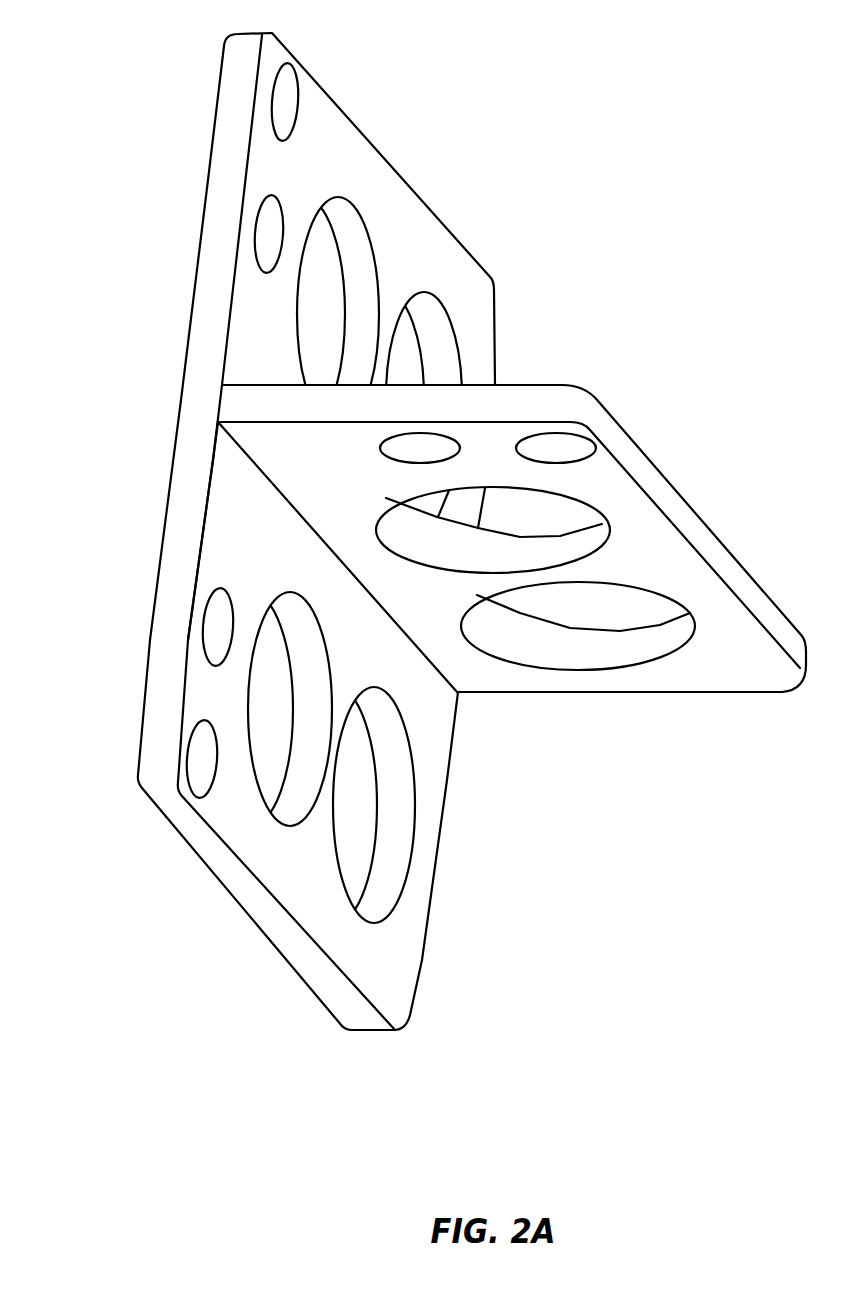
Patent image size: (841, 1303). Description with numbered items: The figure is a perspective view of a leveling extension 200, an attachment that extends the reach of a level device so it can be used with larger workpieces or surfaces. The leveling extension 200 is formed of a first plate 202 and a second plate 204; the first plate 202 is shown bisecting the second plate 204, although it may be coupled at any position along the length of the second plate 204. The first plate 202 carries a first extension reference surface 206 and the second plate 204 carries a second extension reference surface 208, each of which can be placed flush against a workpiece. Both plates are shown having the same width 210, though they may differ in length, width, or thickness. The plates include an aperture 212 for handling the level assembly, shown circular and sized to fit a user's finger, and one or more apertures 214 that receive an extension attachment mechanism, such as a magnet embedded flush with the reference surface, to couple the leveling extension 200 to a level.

The leveling extension 200 is at (697, 55).
The first plate 202 is at (600, 403).
The second plate 204 is at (418, 252).
The first extension reference surface 206 is at (493, 675).
The second extension reference surface 208 is at (213, 130).
The width 210 is at (265, 482).
The aperture 212 is at (368, 807).
The aperture 214 is at (288, 100).